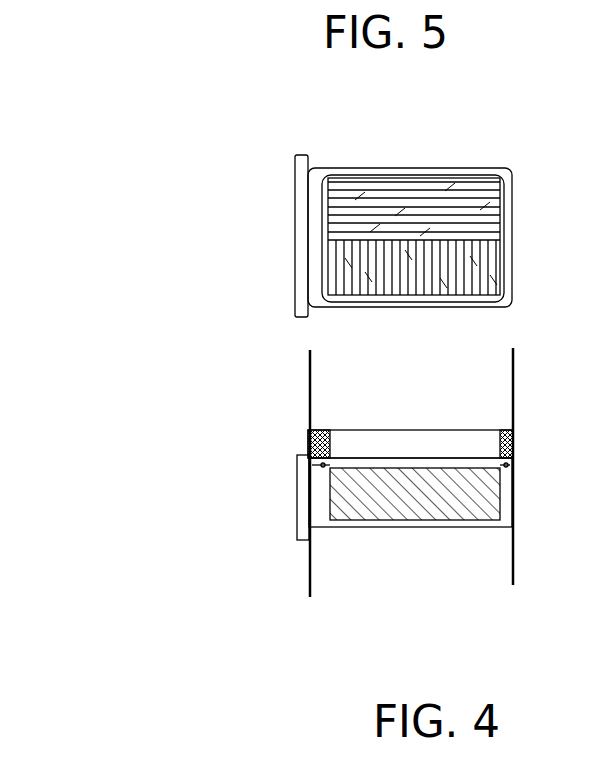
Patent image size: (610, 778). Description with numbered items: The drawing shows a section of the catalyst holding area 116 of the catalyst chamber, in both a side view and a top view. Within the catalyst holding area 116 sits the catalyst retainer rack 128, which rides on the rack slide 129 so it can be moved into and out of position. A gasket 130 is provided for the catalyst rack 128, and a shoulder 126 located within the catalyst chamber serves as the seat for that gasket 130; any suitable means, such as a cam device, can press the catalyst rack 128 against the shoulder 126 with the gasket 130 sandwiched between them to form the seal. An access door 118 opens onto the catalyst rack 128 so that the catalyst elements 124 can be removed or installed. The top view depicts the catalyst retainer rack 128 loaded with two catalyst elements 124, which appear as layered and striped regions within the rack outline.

In FIG. 4, the catalyst holding area 116 is at (351, 494).
In FIG. 4, the access door 118 is at (297, 507).
In FIG. 5, the catalyst elements 124 is at (443, 202).
In FIG. 4, the shoulder 126 is at (310, 430).
In FIG. 5, the catalyst retainer rack 128 is at (383, 163).
In FIG. 5, the rack slide 129 is at (307, 226).
In FIG. 4, the rack slide 129 is at (420, 523).
In FIG. 4, the gasket 130 is at (512, 467).